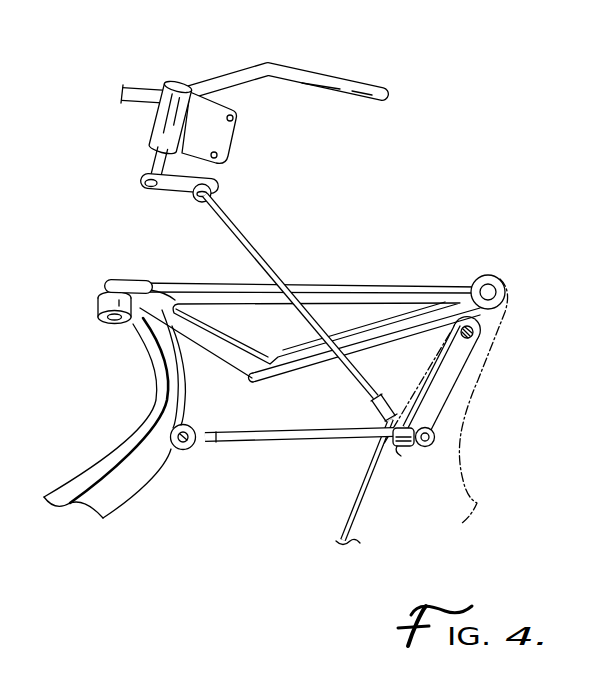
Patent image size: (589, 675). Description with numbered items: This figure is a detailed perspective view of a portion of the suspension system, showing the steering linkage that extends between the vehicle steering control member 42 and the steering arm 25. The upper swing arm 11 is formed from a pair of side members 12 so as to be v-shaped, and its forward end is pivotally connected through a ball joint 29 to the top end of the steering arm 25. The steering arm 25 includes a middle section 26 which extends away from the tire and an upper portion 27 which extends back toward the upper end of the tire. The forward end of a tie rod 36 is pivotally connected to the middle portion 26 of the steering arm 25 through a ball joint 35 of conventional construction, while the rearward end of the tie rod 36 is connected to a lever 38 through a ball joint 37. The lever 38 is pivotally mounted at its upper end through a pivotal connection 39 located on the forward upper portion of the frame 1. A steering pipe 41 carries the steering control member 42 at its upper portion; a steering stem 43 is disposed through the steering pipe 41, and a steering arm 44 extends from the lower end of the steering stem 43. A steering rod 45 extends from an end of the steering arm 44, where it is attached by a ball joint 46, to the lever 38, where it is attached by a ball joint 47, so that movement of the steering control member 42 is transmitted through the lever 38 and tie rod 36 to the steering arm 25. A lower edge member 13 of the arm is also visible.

The frame 1 is at (478, 505).
The upper swing arm 11 is at (360, 279).
The side members 12 is at (212, 287).
The lower edge member 13 is at (320, 357).
The steering arm 25 is at (140, 480).
The middle section 26 is at (138, 424).
The upper portion 27 is at (143, 331).
The ball joint 29 is at (105, 285).
The ball joint 35 is at (185, 450).
The tie rod 36 is at (301, 442).
The ball joint 37 is at (436, 437).
The lever 38 is at (452, 373).
The pivotal connection 39 is at (474, 333).
The steering pipe 41 is at (160, 124).
The steering control member 42 is at (326, 82).
The steering stem 43 is at (152, 165).
The steering arm 44 is at (181, 188).
The steering rod 45 is at (270, 270).
The ball joint 46 is at (211, 190).
The ball joint 47 is at (396, 452).